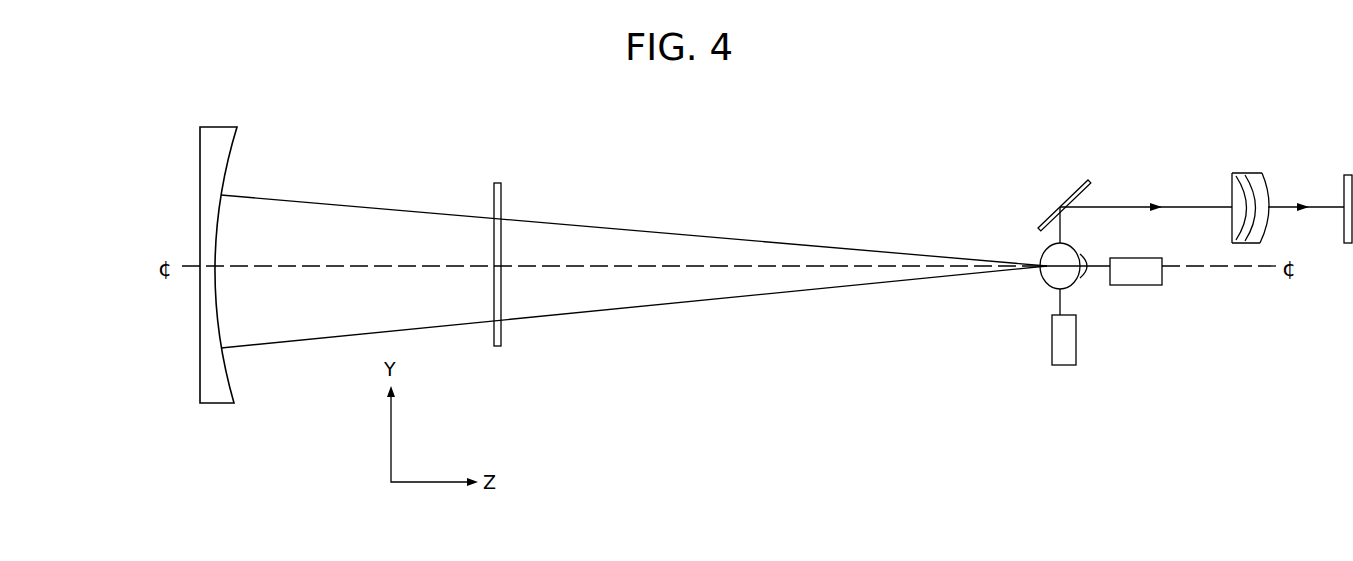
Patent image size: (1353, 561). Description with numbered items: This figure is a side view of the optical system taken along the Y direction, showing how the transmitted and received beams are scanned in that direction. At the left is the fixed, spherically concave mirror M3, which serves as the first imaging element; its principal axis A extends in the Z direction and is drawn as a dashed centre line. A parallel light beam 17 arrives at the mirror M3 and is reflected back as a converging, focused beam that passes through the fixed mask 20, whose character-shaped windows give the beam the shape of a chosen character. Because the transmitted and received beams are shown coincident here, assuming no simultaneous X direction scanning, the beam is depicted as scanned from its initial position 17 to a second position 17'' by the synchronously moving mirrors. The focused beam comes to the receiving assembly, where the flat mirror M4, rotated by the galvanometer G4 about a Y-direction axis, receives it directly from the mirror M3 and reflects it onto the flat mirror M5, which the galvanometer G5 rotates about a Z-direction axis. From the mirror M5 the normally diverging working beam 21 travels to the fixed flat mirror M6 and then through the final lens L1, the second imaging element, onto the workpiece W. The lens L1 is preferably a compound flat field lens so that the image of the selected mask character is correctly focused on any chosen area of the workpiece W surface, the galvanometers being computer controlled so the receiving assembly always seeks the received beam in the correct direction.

The spherically concave mirror M3 is at (218, 135).
The mask 20 is at (494, 196).
The principal axis A is at (355, 266).
The transmitted light beam 17 is at (634, 312).
The scanned transmitted beam 17'' is at (634, 218).
The flat mirror M4 is at (1057, 255).
The flat mirror M5 is at (1083, 262).
The fixed flat mirror M6 is at (1070, 193).
The working beam 21 is at (1140, 205).
The galvanometer G4 is at (1058, 340).
The galvanometer G5 is at (1128, 272).
The final lens L1 is at (1252, 175).
The workpiece W is at (1346, 190).